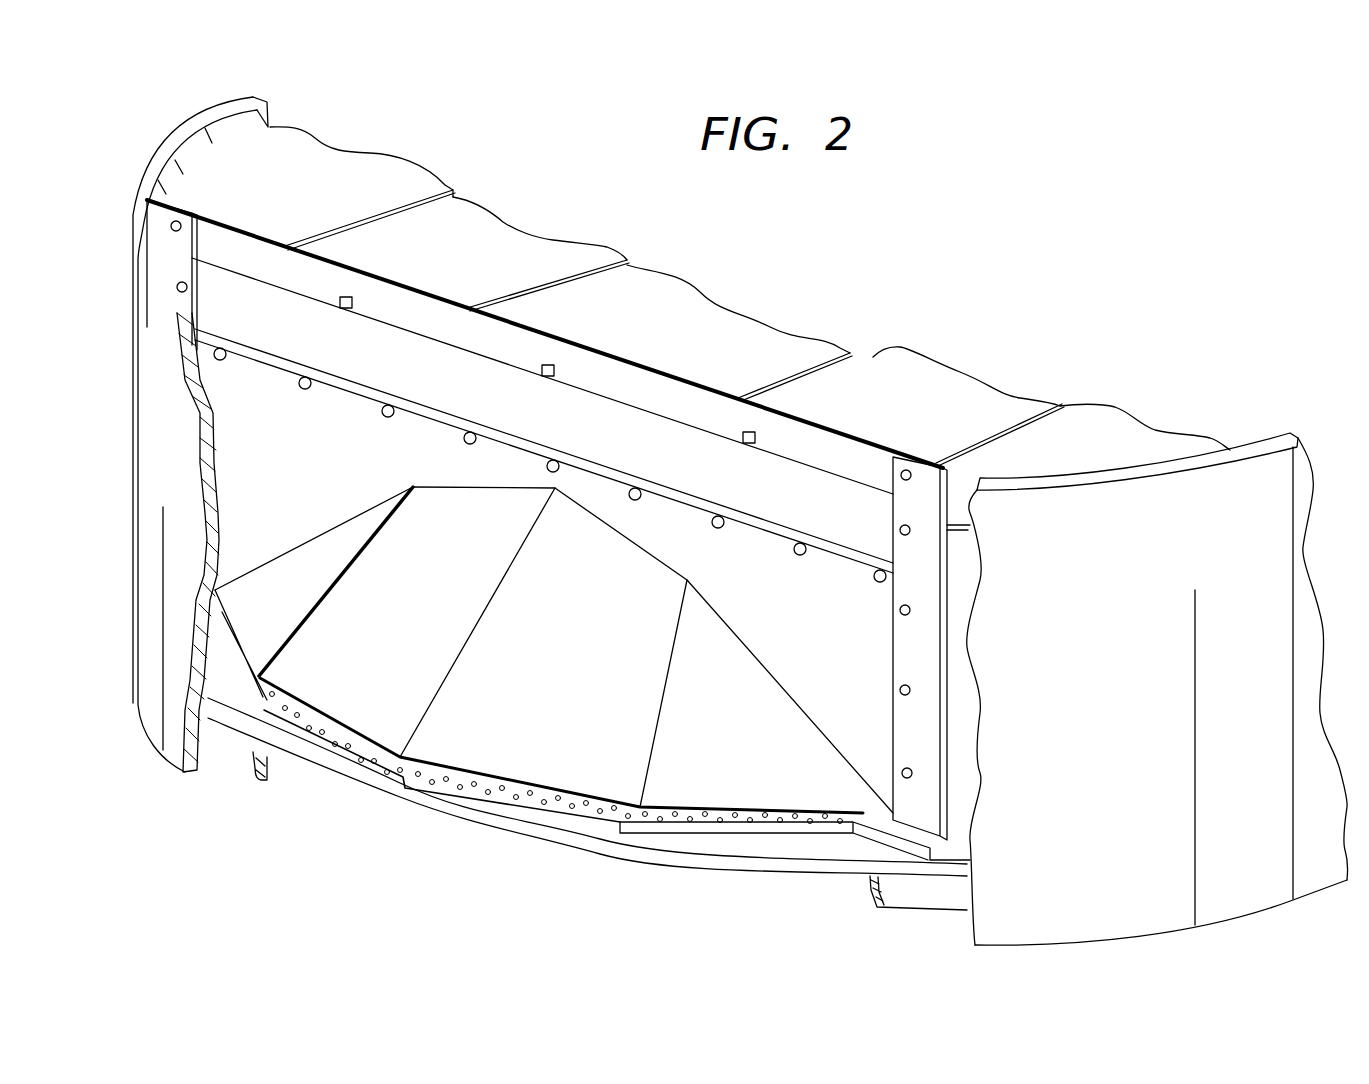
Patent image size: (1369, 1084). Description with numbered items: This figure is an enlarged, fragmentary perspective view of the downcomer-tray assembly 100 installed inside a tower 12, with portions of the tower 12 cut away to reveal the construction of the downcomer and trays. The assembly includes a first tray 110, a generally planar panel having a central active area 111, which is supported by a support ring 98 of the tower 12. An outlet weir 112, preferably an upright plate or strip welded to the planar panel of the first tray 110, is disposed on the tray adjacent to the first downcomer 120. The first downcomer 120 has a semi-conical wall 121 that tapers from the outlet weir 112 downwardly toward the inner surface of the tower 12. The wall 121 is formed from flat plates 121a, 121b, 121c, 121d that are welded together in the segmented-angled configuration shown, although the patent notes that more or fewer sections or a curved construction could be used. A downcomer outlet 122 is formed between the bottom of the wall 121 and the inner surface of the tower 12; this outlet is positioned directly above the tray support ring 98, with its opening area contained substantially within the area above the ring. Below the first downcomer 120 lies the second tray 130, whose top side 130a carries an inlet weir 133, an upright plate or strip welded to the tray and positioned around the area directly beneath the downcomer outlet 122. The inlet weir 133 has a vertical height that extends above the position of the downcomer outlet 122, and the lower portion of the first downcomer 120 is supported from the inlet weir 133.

The tower 12 is at (1099, 733).
The support ring 98 is at (897, 899).
The downcomer-tray assembly 100 is at (1074, 281).
The first tray 110 is at (960, 380).
The central active area 111 is at (311, 201).
The outlet weir 112 is at (637, 393).
The first downcomer 120 is at (233, 433).
The semi-conical wall 121 is at (738, 668).
The flat plate 121a is at (300, 611).
The flat plate 121b is at (446, 598).
The flat plate 121c is at (614, 638).
The flat plate 121d is at (764, 765).
The downcomer outlet 122 is at (314, 757).
The second tray 130 is at (342, 778).
The top side 130a is at (500, 813).
The inlet weir 133 is at (742, 826).